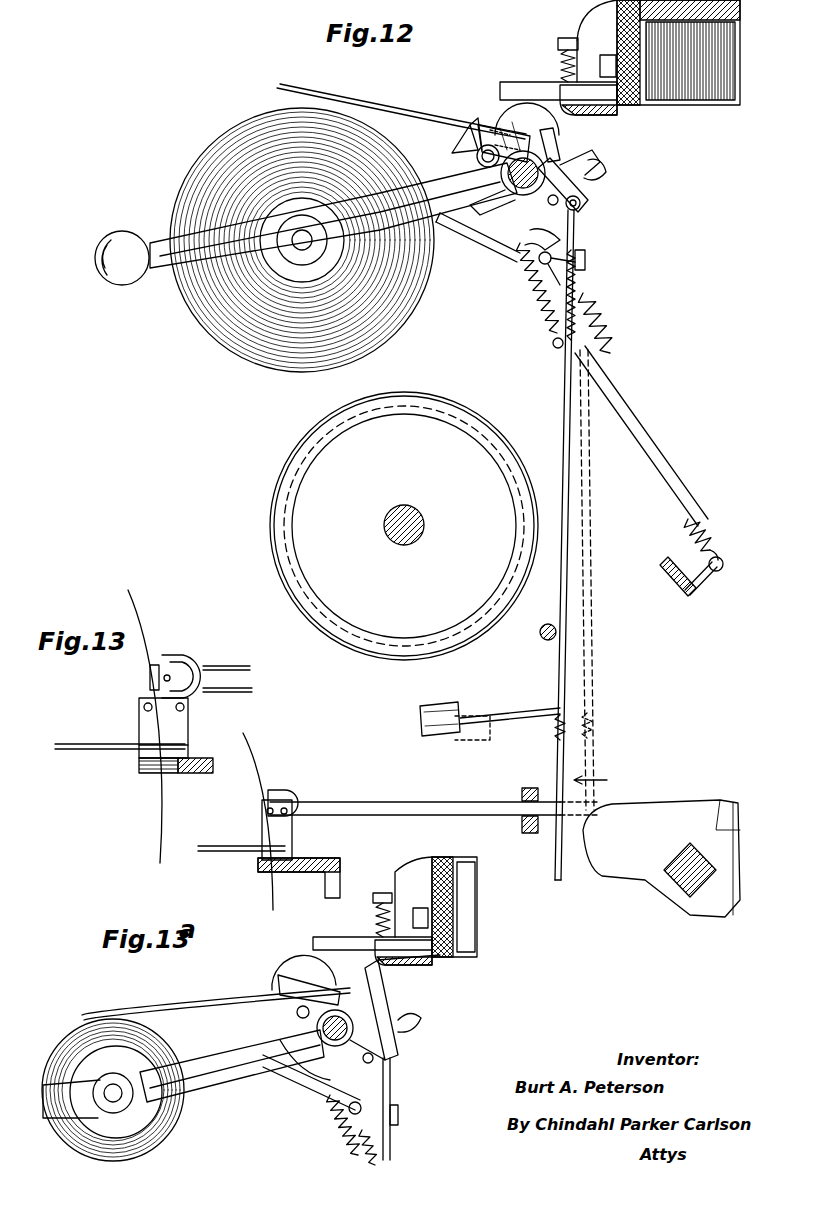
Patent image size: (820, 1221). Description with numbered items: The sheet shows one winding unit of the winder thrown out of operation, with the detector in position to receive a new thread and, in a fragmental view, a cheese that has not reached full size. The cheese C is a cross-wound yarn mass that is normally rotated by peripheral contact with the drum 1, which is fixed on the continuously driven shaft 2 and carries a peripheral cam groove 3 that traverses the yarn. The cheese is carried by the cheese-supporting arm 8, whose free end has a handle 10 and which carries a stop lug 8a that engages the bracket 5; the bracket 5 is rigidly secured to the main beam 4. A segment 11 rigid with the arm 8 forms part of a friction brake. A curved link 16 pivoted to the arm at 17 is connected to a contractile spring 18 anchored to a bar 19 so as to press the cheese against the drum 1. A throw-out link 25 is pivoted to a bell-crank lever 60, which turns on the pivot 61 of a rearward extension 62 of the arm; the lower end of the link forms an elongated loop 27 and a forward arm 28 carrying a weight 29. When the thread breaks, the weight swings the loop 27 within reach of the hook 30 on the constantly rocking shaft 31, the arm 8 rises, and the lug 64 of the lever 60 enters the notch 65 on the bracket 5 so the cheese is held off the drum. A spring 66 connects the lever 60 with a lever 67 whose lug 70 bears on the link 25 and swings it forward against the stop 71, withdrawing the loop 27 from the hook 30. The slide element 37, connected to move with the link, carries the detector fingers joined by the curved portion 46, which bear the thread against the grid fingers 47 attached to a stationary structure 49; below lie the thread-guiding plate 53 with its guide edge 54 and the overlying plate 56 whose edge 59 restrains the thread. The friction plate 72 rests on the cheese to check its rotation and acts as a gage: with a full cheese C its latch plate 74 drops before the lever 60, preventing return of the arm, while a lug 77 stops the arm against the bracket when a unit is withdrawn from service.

In FIG. 12, the cheese C is at (200, 161).
In FIG. 13A, the cheese C is at (55, 1048).
In FIG. 12, the handle 10 is at (121, 240).
In FIG. 12, the cheese-supporting arm 8 is at (455, 232).
In FIG. 13A, the cheese-supporting arm 8 is at (210, 1079).
In FIG. 12, the stop lug 8a is at (600, 166).
In FIG. 13A, the stop lug 8a is at (418, 1021).
In FIG. 12, the friction plate 72 is at (380, 114).
In FIG. 13A, the friction plate 72 is at (190, 1010).
In FIG. 12, the pivot 17 is at (477, 156).
In FIG. 12, the lug 77 is at (470, 128).
In FIG. 12, the latch plate 74 is at (515, 130).
In FIG. 13A, the latch plate 74 is at (320, 976).
In FIG. 12, the segment 11 is at (527, 105).
In FIG. 12, the lug 64 is at (554, 150).
In FIG. 13A, the lug 64 is at (392, 997).
In FIG. 12, the notch 65 is at (567, 118).
In FIG. 13A, the notch 65 is at (372, 940).
In FIG. 12, the bracket 5 is at (618, 108).
In FIG. 13A, the bracket 5 is at (405, 905).
In FIG. 12, the beam 4 is at (700, 98).
In FIG. 13A, the beam 4 is at (470, 933).
In FIG. 12, the rearward extension 62 is at (590, 180).
In FIG. 12, the pivot 61 is at (580, 192).
In FIG. 12, the bell-crank lever 60 is at (581, 205).
In FIG. 13A, the bell-crank lever 60 is at (385, 1051).
In FIG. 12, the curved link 16 is at (495, 243).
In FIG. 13A, the curved link 16 is at (288, 1087).
In FIG. 12, the contractile spring 66 is at (545, 310).
In FIG. 12, the lug 70 is at (586, 263).
In FIG. 13A, the lug 70 is at (397, 1111).
In FIG. 12, the lever 67 is at (580, 292).
In FIG. 13A, the lever 67 is at (396, 1129).
In FIG. 12, the throw-out link 25 is at (590, 515).
In FIG. 13A, the throw-out link 25 is at (390, 1081).
In FIG. 12, the contractile spring 18 is at (615, 342).
In FIG. 12, the bar 19 is at (690, 597).
In FIG. 12, the drum 1 is at (270, 522).
In FIG. 12, the cam groove 3 is at (292, 446).
In FIG. 12, the shaft 2 is at (424, 531).
In FIG. 12, the stop 71 is at (540, 634).
In FIG. 12, the weight 29 is at (428, 710).
In FIG. 12, the arm 28 is at (510, 708).
In FIG. 12, the slide element 37 is at (421, 821).
In FIG. 13, the slide element 37 is at (242, 675).
In FIG. 12, the plate 56 is at (233, 846).
In FIG. 13, the plate 56 is at (80, 744).
In FIG. 12, the loop 27 is at (556, 873).
In FIG. 12, the hook 30 is at (650, 820).
In FIG. 12, the rocking shaft 31 is at (675, 895).
In FIG. 13, the grid fingers 47 is at (168, 676).
In FIG. 13, the curved portion 46 is at (150, 683).
In FIG. 13, the edge 59 is at (155, 745).
In FIG. 13, the stationary structure 49 is at (188, 726).
In FIG. 13, the plate 53 is at (188, 775).
In FIG. 13, the thread-guiding edge 54 is at (155, 763).